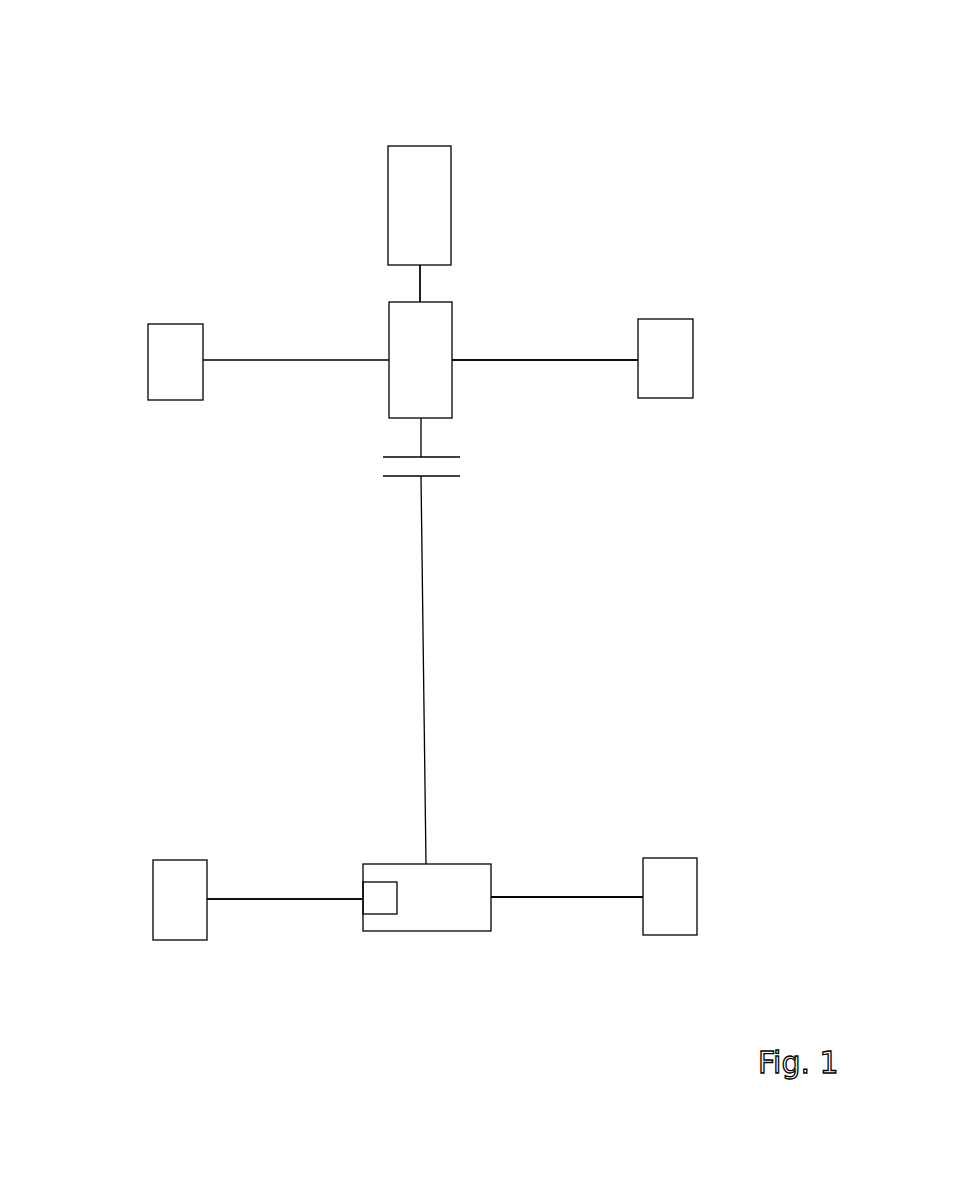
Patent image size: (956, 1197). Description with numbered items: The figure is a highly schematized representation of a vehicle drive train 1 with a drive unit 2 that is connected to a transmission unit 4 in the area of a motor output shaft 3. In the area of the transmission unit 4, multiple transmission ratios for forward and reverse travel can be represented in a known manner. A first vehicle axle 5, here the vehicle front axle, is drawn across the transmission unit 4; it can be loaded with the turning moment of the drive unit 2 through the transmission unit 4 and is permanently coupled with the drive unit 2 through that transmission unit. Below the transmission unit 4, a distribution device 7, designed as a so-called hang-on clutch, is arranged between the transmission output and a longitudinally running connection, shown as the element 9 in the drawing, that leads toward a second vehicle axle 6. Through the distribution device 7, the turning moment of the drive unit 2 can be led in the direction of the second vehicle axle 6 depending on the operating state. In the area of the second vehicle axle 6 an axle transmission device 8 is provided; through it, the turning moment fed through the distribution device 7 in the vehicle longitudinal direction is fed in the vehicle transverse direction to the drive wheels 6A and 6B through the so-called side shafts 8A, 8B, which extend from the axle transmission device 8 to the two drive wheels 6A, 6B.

The vehicle drive train 1 is at (527, 157).
The drive unit 2 is at (420, 205).
The motor output shaft 3 is at (420, 283).
The transmission unit 4 is at (418, 381).
The first vehicle axle 5 is at (542, 320).
The second vehicle axle 6 is at (563, 853).
The distribution device 7 is at (485, 467).
The axle transmission device 8 is at (428, 938).
The drive shaft 9 is at (423, 671).
The drive wheel 6A is at (177, 910).
The drive wheel 6B is at (671, 906).
The side shaft 8A is at (285, 905).
The side shaft 8B is at (572, 905).